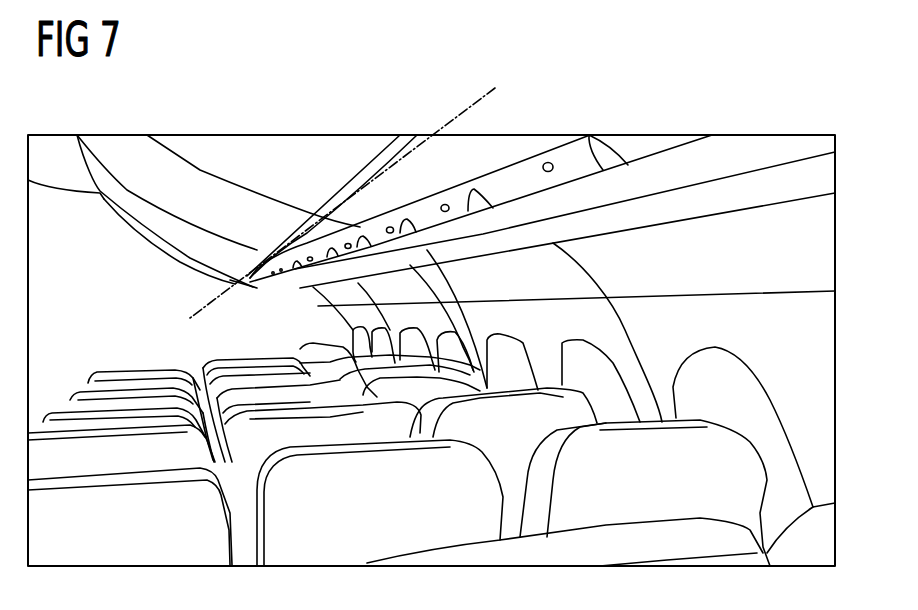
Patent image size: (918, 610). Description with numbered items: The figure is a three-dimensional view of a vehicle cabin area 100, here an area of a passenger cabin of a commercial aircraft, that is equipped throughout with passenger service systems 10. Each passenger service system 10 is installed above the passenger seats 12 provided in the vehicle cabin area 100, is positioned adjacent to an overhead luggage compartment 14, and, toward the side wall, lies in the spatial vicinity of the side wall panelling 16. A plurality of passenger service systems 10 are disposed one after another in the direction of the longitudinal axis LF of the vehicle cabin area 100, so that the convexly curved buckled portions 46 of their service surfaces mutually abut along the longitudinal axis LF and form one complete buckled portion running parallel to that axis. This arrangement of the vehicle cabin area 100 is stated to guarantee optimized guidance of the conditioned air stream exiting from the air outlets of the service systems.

The passenger service system 10 is at (797, 112).
The passenger seats 12 is at (163, 363).
The overhead luggage compartment 14 is at (127, 205).
The side wall panelling 16 is at (811, 267).
The buckled portion 46 is at (647, 150).
The vehicle cabin area 100 is at (471, 163).
The longitudinal axis of the vehicle cabin area LF is at (495, 88).